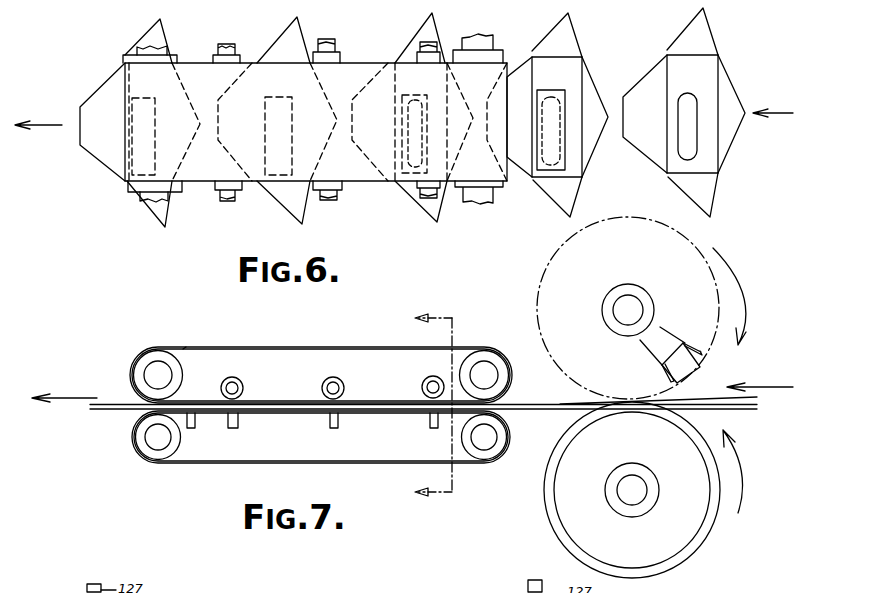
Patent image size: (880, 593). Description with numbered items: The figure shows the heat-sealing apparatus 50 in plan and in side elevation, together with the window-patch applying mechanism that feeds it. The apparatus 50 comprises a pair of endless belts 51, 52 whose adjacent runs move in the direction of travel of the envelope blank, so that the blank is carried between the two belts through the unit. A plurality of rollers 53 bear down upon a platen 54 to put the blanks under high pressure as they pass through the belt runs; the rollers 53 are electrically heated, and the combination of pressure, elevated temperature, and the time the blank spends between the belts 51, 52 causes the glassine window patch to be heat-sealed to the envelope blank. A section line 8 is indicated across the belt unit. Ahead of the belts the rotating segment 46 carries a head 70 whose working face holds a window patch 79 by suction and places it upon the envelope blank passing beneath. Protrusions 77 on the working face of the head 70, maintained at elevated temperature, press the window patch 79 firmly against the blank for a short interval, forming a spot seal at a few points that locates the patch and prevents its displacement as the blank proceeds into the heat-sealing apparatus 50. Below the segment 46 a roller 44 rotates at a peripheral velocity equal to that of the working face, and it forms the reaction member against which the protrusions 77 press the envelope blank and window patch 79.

In FIG. 6, the heat-sealing apparatus 50 is at (370, 182).
In FIG. 7, the heat-sealing apparatus 50 is at (189, 345).
In FIG. 7, the endless belt 51 is at (300, 351).
In FIG. 7, the endless belt 52 is at (288, 463).
In FIG. 7, the rollers 53 is at (321, 387).
In FIG. 7, the platen 54 is at (257, 419).
In FIG. 7, the section line 8- 8 is at (420, 407).
In FIG. 7, the segment 46 is at (668, 321).
In FIG. 7, the head 70 is at (662, 375).
In FIG. 7, the protrusions 77 is at (697, 372).
In FIG. 7, the window patch 79 is at (685, 382).
In FIG. 7, the roller 44 is at (720, 467).